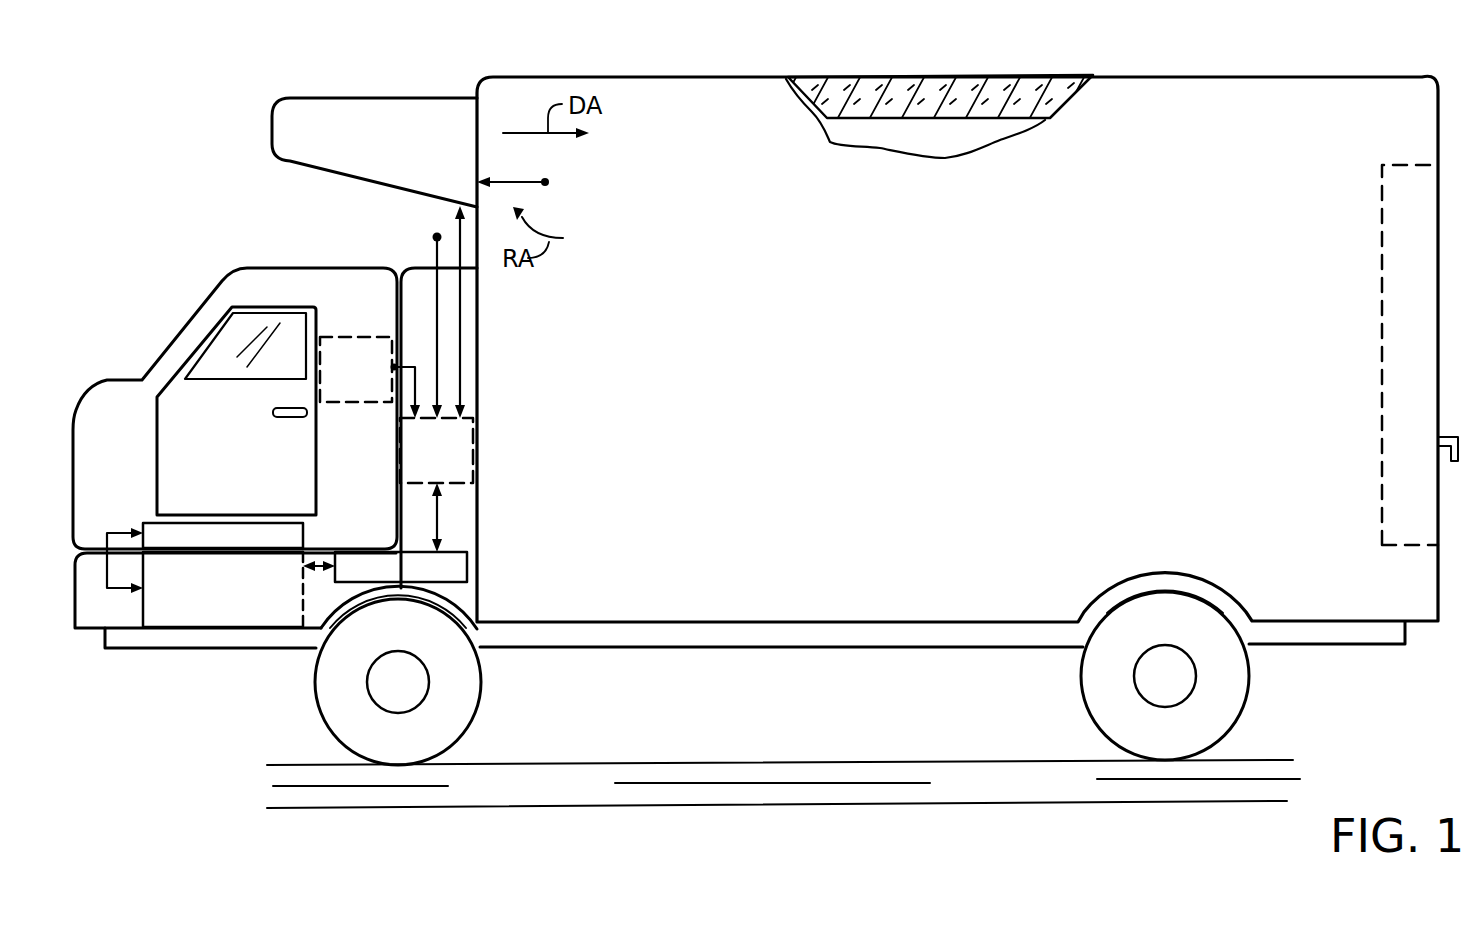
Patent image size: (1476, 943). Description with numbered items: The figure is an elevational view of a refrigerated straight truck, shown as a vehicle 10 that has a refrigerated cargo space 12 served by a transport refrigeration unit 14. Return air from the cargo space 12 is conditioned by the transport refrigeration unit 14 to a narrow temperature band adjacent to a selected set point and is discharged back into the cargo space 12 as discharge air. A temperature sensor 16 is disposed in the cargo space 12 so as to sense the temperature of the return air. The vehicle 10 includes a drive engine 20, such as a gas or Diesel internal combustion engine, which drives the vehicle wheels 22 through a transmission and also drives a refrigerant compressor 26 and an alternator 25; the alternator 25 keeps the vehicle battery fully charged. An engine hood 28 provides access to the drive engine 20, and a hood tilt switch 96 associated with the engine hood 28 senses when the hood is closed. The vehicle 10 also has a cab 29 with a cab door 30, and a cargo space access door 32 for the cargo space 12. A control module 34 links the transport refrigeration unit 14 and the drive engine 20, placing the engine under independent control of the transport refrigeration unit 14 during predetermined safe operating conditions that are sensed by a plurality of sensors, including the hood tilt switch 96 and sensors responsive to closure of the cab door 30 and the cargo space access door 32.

The vehicle 10 is at (829, 706).
The refrigerated cargo space 12 is at (948, 143).
The transport refrigeration unit 14 is at (373, 96).
The temperature sensor 16 is at (549, 182).
The drive engine 20 is at (142, 614).
The vehicle wheels 22 is at (1081, 673).
The alternator 25 is at (150, 521).
The refrigerant compressor 26 is at (458, 548).
The engine hood 28 is at (100, 394).
The cab 29 is at (276, 272).
The cab door 30 is at (273, 452).
The cargo space access door 32 is at (1407, 160).
The control module 34 is at (465, 486).
The hood tilt switch 96 is at (384, 338).